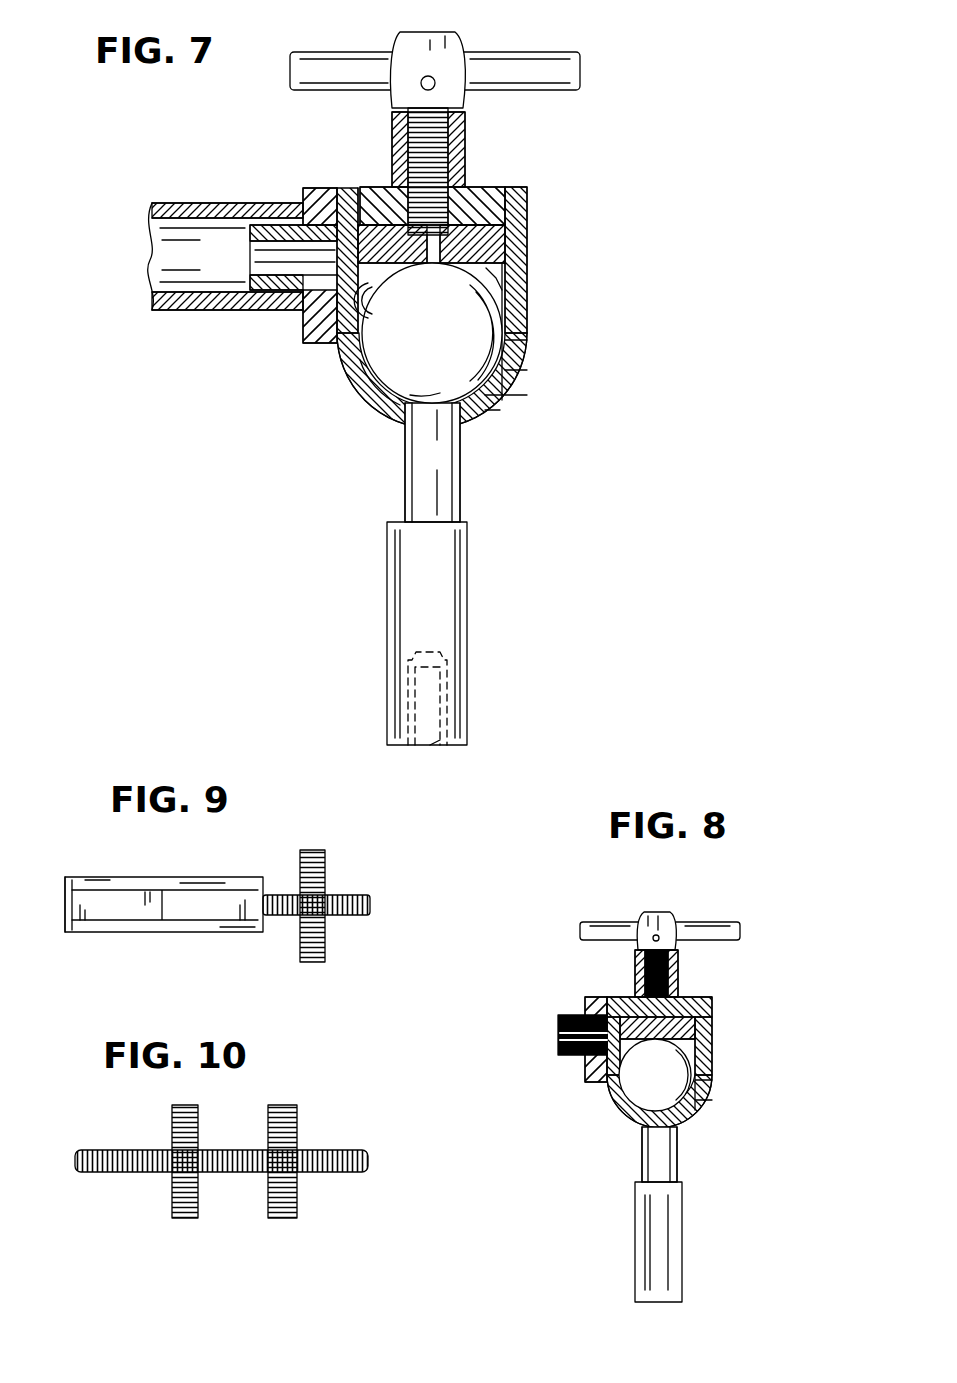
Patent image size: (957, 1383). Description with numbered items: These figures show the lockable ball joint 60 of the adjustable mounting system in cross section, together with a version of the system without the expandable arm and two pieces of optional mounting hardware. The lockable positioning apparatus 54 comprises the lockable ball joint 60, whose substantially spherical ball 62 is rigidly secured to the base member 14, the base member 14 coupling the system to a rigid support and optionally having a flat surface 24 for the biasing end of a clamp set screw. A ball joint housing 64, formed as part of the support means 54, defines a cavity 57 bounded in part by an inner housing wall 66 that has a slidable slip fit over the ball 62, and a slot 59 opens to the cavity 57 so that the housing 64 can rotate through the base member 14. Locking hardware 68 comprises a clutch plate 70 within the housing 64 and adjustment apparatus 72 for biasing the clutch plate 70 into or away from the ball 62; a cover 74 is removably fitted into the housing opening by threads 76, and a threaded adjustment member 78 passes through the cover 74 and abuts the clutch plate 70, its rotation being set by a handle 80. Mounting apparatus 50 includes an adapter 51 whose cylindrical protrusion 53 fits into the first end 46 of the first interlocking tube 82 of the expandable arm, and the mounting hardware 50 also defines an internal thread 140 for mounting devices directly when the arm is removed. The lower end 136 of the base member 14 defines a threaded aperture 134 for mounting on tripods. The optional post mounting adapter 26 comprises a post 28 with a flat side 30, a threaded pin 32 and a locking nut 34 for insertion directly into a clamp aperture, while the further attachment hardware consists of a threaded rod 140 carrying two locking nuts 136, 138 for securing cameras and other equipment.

In FIG. 7, the base member 14 is at (462, 480).
In FIG. 8, the base member 14 is at (678, 1162).
In FIG. 7, the flat surface 24 is at (468, 592).
In FIG. 9, the post mounting adapter 26 is at (206, 975).
In FIG. 9, the post 28 is at (128, 932).
In FIG. 9, the flat side 30 is at (78, 912).
In FIG. 9, the threaded pin 32 is at (282, 896).
In FIG. 9, the locking nut 34 is at (326, 870).
In FIG. 7, the first end 46 is at (286, 334).
In FIG. 7, the mounting apparatus 50 is at (300, 184).
In FIG. 7, the adapter 51 is at (322, 188).
In FIG. 7, the protrusion 53 is at (268, 292).
In FIG. 7, the lockable positioning apparatus 54 is at (692, 745).
In FIG. 8, the lockable positioning apparatus 54 is at (787, 922).
In FIG. 7, the cavity 57 is at (500, 275).
In FIG. 7, the slot 59 is at (514, 388).
In FIG. 7, the lockable ball joint 60 is at (566, 362).
In FIG. 8, the lockable ball joint 60 is at (756, 1092).
In FIG. 7, the ball 62 is at (416, 364).
In FIG. 8, the ball 62 is at (641, 1088).
In FIG. 7, the ball joint housing 64 is at (352, 408).
In FIG. 7, the inner housing wall 66 is at (340, 342).
In FIG. 7, the locking hardware 68 is at (602, 53).
In FIG. 8, the locking hardware 68 is at (747, 922).
In FIG. 7, the clutch plate 70 is at (506, 250).
In FIG. 7, the adjustment apparatus 72 is at (504, 152).
In FIG. 8, the adjustment apparatus 72 is at (732, 974).
In FIG. 7, the cover 74 is at (500, 192).
In FIG. 7, the threads 76 is at (520, 220).
In FIG. 7, the adjustment member 78 is at (455, 134).
In FIG. 7, the handle 80 is at (528, 72).
In FIG. 8, the handle 80 is at (700, 920).
In FIG. 7, the first interlocking tube 82 is at (176, 205).
In FIG. 7, the threaded aperture 134 is at (446, 716).
In FIG. 7, the lower end 136 is at (430, 746).
In FIG. 10, the lower end 136 is at (188, 1218).
In FIG. 10, the locking nut 138 is at (284, 1218).
In FIG. 7, the threaded rod 140 is at (232, 282).
In FIG. 8, the threaded rod 140 is at (566, 1036).
In FIG. 10, the threaded rod 140 is at (116, 1172).